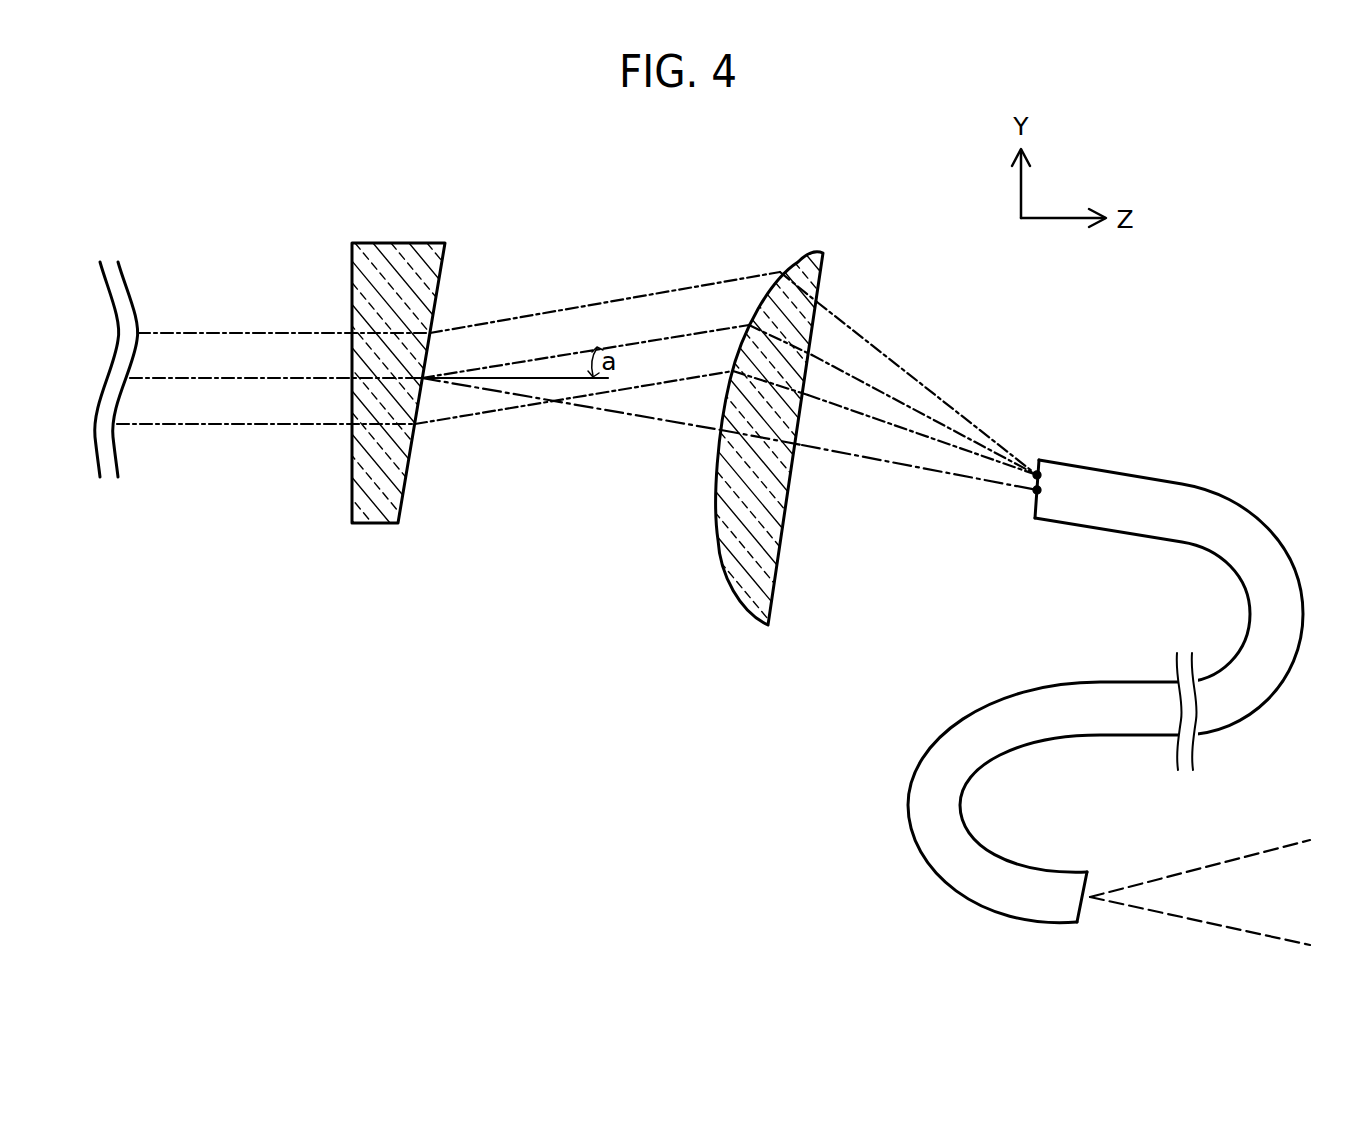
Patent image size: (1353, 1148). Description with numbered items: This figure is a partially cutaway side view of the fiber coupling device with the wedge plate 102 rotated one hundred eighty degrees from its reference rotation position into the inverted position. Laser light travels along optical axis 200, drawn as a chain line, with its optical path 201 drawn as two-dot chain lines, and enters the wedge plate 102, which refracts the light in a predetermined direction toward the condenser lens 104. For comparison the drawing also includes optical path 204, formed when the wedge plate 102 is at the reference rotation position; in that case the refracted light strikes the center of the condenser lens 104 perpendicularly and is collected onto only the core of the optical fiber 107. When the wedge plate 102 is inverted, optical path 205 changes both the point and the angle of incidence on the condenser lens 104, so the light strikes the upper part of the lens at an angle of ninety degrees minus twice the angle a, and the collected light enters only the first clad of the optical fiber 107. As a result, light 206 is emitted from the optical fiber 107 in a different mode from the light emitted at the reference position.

The wedge plate 102 is at (400, 243).
The condenser lens 104 is at (816, 250).
The optical fiber 107 is at (1133, 487).
The optical axis 200 is at (233, 378).
The optical path 201 is at (315, 425).
The optical path 204 is at (641, 420).
The optical path 205 is at (906, 402).
The light 206 is at (1212, 862).